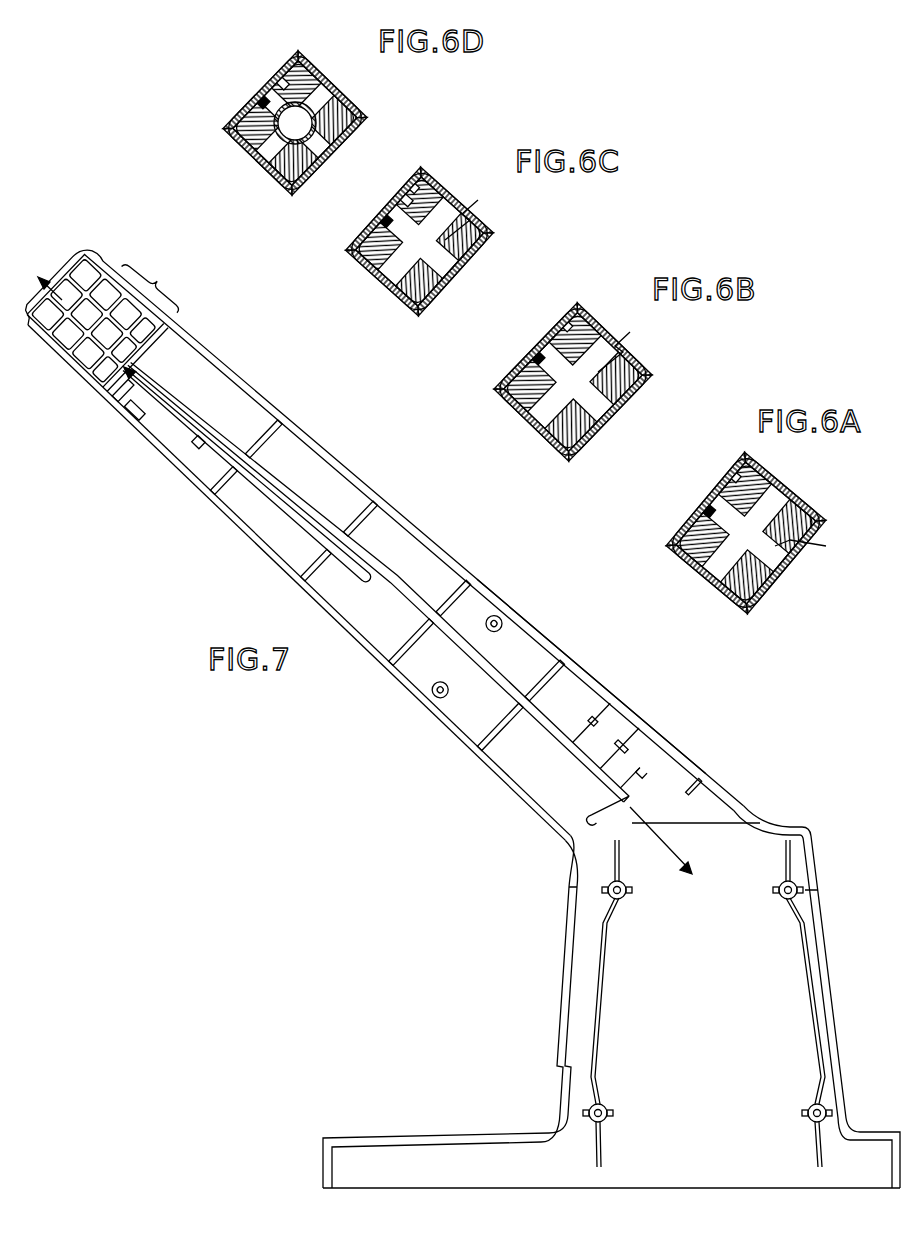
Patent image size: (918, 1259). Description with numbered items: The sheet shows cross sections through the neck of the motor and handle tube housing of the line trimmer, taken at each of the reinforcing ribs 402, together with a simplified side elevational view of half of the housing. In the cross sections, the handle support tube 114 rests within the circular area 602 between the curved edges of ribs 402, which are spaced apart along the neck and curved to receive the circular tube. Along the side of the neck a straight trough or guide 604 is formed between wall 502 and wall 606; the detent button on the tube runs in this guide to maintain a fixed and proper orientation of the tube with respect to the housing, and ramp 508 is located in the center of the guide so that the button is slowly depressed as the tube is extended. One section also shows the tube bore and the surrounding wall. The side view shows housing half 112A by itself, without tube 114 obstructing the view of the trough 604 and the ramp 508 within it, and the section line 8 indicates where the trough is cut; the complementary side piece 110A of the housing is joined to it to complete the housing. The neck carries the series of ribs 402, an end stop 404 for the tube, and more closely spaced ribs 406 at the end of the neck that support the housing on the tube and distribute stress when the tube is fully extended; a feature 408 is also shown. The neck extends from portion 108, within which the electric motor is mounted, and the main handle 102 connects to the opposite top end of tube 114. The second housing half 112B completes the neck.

In FIG. 7, the section line 8- 8 is at (396, 571).
In FIG. 6B, the main handle 102 is at (588, 310).
In FIG. 7, the motor portion 108 is at (830, 942).
In FIG. 7, the housing side piece 110A is at (745, 772).
In FIG. 6D, the housing half 112A is at (292, 56).
In FIG. 6C, the housing half 112A is at (425, 172).
In FIG. 6B, the housing half 112A is at (500, 385).
In FIG. 6A, the housing half 112A is at (668, 558).
In FIG. 7, the housing half 112A is at (620, 708).
In FIG. 6D, the second side wall 112B is at (350, 125).
In FIG. 6C, the second side wall 112B is at (480, 250).
In FIG. 6B, the second side wall 112B is at (640, 395).
In FIG. 6A, the second side wall 112B is at (778, 580).
In FIG. 6D, the handle support tube 114 is at (318, 103).
In FIG. 6D, the reinforcing ribs 402 is at (340, 112).
In FIG. 6C, the reinforcing ribs 402 is at (440, 192).
In FIG. 6B, the reinforcing ribs 402 is at (632, 372).
In FIG. 6A, the reinforcing ribs 402 is at (690, 538).
In FIG. 7, the reinforcing ribs 402 is at (312, 563).
In FIG. 7, the end stop 404 is at (645, 777).
In FIG. 7, the ribs 406 is at (152, 284).
In FIG. 7, the slot 408 is at (136, 405).
In FIG. 6D, the wall 502 is at (280, 72).
In FIG. 6C, the wall 502 is at (405, 185).
In FIG. 6B, the wall 502 is at (560, 325).
In FIG. 6A, the wall 502 is at (727, 480).
In FIG. 7, the wall 502 is at (208, 393).
In FIG. 6D, the ramp 508 is at (262, 93).
In FIG. 6C, the ramp 508 is at (385, 210).
In FIG. 7, the ramp 508 is at (318, 492).
In FIG. 6C, the circular area 602 is at (482, 208).
In FIG. 6B, the circular area 602 is at (631, 341).
In FIG. 6A, the circular area 602 is at (821, 546).
In FIG. 6C, the guide 604 is at (380, 288).
In FIG. 6B, the guide 604 is at (545, 345).
In FIG. 6A, the guide 604 is at (710, 500).
In FIG. 7, the guide 604 is at (118, 393).
In FIG. 6D, the wall 606 is at (240, 118).
In FIG. 6C, the wall 606 is at (365, 222).
In FIG. 6B, the wall 606 is at (530, 360).
In FIG. 6A, the wall 606 is at (690, 517).
In FIG. 7, the wall 606 is at (197, 446).